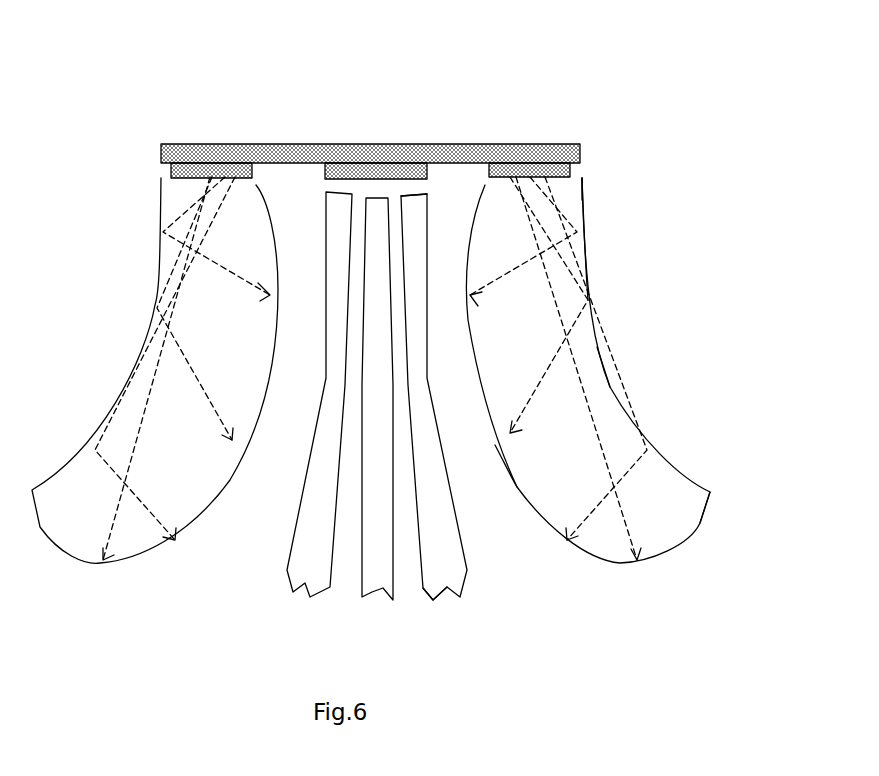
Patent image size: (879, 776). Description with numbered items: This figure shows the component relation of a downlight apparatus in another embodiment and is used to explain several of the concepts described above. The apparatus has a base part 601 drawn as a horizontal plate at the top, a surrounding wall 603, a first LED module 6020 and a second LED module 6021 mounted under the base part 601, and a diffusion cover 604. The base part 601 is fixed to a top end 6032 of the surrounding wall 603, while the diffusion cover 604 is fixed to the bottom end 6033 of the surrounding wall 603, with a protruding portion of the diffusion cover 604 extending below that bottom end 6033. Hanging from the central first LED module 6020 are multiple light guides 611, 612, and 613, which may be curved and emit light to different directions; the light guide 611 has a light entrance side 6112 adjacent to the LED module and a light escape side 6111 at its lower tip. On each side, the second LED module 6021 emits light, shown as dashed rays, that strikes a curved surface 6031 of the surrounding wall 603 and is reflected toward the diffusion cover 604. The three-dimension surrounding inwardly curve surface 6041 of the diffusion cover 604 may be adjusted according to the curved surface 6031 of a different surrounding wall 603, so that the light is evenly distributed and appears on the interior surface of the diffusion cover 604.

The base part 601 is at (578, 150).
The first LED module 6020 is at (390, 172).
The second LED module 6021 is at (567, 170).
The surrounding wall 603 is at (582, 222).
The curved surface 6031 is at (610, 387).
The top end 6032 is at (583, 182).
The bottom end 6033 is at (710, 492).
The diffusion cover 604 is at (602, 562).
The three-dimension surrounding inwardly curve surface 6041 is at (517, 487).
The light guide 611 is at (458, 587).
The light escape side 6111 is at (433, 600).
The light entrance side 6112 is at (417, 197).
The light guide 612 is at (368, 583).
The light guide 613 is at (313, 582).